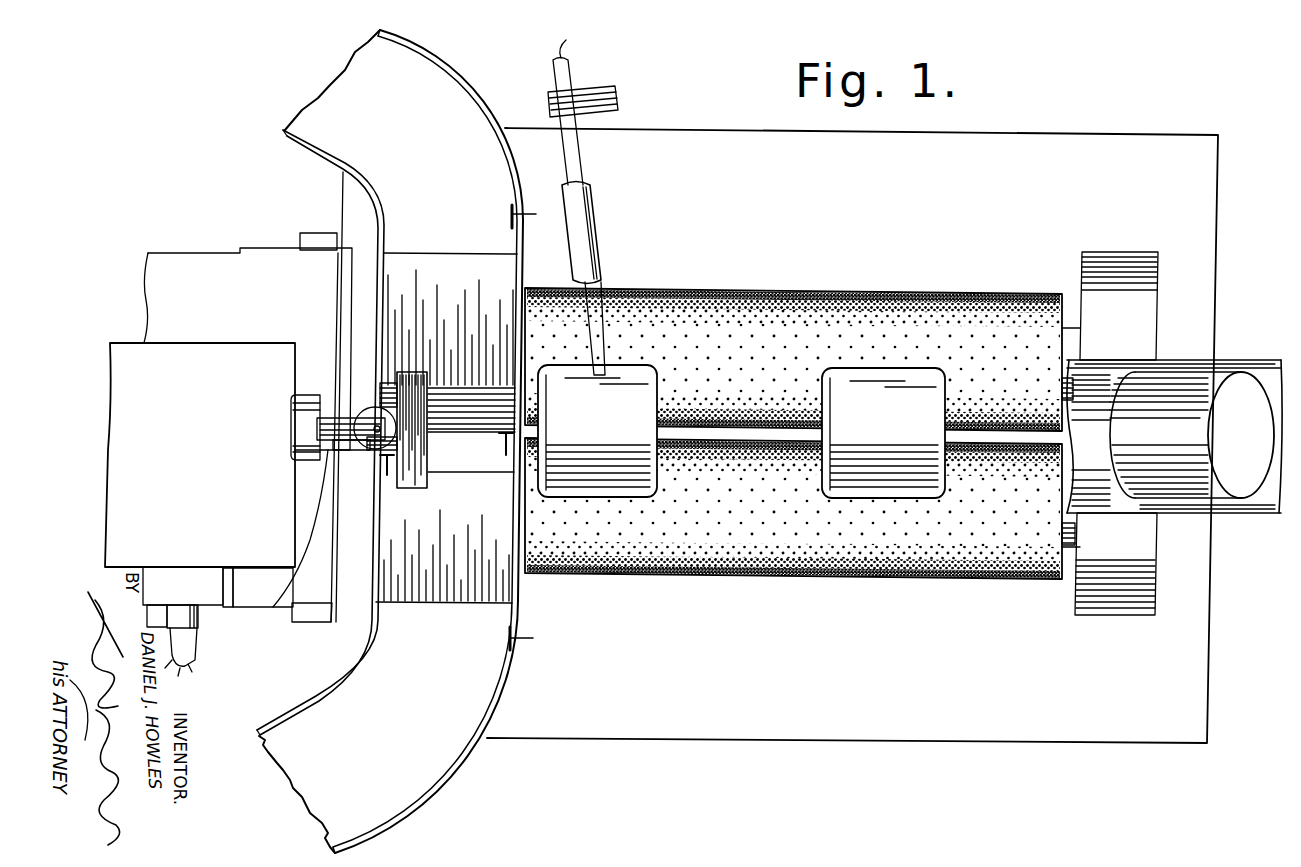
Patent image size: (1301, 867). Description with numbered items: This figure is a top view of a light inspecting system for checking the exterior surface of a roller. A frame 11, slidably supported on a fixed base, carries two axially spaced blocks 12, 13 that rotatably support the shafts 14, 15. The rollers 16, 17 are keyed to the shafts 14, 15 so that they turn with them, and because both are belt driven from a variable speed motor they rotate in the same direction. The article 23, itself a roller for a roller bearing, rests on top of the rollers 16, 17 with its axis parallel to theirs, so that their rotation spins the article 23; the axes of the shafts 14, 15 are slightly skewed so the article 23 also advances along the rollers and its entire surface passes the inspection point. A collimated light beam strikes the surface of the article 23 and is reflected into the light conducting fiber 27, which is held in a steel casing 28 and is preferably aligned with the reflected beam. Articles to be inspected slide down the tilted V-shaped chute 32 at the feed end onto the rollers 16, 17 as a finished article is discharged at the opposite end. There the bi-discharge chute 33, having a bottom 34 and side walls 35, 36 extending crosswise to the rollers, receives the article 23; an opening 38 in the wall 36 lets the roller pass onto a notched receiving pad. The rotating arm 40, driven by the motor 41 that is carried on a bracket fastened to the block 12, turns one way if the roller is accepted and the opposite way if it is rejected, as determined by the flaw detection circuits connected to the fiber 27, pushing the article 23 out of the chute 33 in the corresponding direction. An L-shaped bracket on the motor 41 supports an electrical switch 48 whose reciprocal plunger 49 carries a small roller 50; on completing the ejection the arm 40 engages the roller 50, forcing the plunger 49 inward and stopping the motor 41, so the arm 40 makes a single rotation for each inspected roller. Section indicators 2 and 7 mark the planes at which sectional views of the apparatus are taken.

The frame 11 is at (1048, 148).
The block 12 is at (310, 612).
The block 13 is at (1103, 612).
The shaft 14 is at (1072, 550).
The shaft 15 is at (1071, 328).
The roller 16 is at (770, 578).
The roller 17 is at (842, 298).
The article 23 is at (657, 370).
The light conducting fiber 27 is at (568, 52).
The steel casing 28 is at (592, 242).
The V-shaped chute 32 is at (1248, 363).
The bi-discharge chute 33 is at (340, 142).
The bottom 34 is at (453, 98).
The side wall 35 is at (337, 167).
The side wall 36 is at (495, 113).
The opening 38 is at (515, 513).
The rotating arm 40 is at (417, 457).
The motor 41 is at (147, 273).
The electrical switch 48 is at (123, 360).
The reciprocal plunger 49 is at (337, 413).
The roller 50 is at (372, 452).
The section line 2- 2 is at (531, 427).
The section line 7- 7 is at (446, 473).